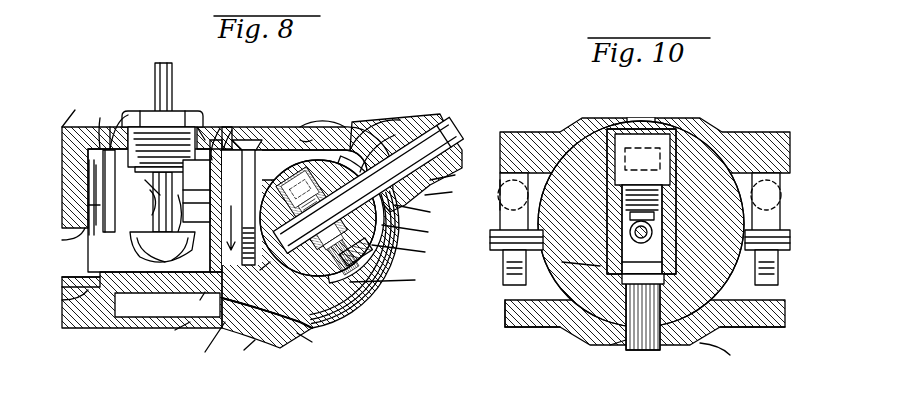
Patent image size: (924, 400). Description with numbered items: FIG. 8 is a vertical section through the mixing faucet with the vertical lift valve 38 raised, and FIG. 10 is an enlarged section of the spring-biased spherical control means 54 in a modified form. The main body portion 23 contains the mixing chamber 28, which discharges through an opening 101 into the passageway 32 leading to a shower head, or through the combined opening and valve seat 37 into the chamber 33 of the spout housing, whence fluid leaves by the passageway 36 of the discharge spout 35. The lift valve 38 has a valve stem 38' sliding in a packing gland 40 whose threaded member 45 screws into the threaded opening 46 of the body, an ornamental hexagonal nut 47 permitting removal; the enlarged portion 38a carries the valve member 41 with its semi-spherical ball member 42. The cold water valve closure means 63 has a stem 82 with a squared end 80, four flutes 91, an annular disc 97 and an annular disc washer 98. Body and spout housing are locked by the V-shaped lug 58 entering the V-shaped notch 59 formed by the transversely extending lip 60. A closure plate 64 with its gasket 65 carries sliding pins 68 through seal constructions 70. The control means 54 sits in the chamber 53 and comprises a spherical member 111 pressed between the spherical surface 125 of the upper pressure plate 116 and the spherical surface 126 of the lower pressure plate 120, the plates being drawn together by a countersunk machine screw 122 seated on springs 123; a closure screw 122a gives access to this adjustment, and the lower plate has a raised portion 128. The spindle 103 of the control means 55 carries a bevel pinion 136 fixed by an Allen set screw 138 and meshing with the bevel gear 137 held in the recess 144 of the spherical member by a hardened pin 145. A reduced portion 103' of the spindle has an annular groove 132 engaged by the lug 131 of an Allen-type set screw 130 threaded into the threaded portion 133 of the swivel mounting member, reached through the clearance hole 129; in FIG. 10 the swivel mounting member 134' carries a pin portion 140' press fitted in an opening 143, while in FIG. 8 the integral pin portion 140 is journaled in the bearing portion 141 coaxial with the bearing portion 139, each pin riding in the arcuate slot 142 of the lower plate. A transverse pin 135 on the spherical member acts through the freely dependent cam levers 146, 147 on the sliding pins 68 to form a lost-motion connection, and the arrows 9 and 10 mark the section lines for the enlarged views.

In FIG. 8, the main body portion 23 is at (62, 140).
In FIG. 8, the stem 82 is at (89, 185).
In FIG. 8, the flutes 91 is at (96, 200).
In FIG. 8, the annular disc washer 98 is at (88, 218).
In FIG. 8, the opening 101 is at (62, 240).
In FIG. 8, the passageway 32 is at (62, 280).
In FIG. 8, the mixing chamber 28 is at (109, 232).
In FIG. 8, the valve stem 38' is at (171, 74).
In FIG. 8, the packing gland 40 is at (140, 111).
In FIG. 8, the threaded opening 46 is at (128, 115).
In FIG. 8, the ornamental hexagonal nut 47 is at (100, 118).
In FIG. 8, the valve closure means 63 is at (110, 130).
In FIG. 8, the vertical lift valve 38 is at (142, 147).
In FIG. 8, the threaded member 45 is at (162, 127).
In FIG. 8, the enlarged valve stem portion 38a is at (153, 200).
In FIG. 8, the squared ends 80 is at (145, 180).
In FIG. 8, the valve member 41 is at (150, 225).
In FIG. 8, the semi-spherical ball member 42 is at (162, 247).
In FIG. 8, the V-shaped notch 59 is at (196, 191).
In FIG. 8, the seal construction 70 is at (196, 193).
In FIG. 8, the transversely extending lip 60 is at (196, 210).
In FIG. 8, the V-shaped transversely extending lug 58 is at (200, 127).
In FIG. 8, the countersunk head machine screw 122 is at (222, 128).
In FIG. 8, the closure countersunk screw 122a is at (232, 130).
In FIG. 8, the section line 10— 10 is at (256, 105).
In FIG. 8, the springs 123 is at (298, 127).
In FIG. 8, the clearance hole 129 is at (305, 140).
In FIG. 10, the clearance hole 129 is at (645, 120).
In FIG. 8, the sliding pins 68 is at (240, 207).
In FIG. 10, the sliding pins 68 is at (500, 210).
In FIG. 8, the section line 9— 9 is at (470, 132).
In FIG. 8, the transverse pin 135 is at (257, 272).
In FIG. 10, the transverse pin 135 is at (503, 268).
In FIG. 8, the control means 55 is at (422, 110).
In FIG. 8, the bevel pinion 136 is at (385, 128).
In FIG. 10, the bevel pinion 136 is at (485, 183).
In FIG. 8, the upper pressure plate 116 is at (392, 128).
In FIG. 10, the upper pressure plate 116 is at (510, 132).
In FIG. 8, the spherical member 111 is at (305, 272).
In FIG. 10, the spherical member 111 is at (590, 152).
In FIG. 8, the Allen-type set screw 130 is at (298, 178).
In FIG. 10, the Allen-type set screw 130 is at (620, 150).
In FIG. 8, the spring-biased spherical control means 54 is at (316, 168).
In FIG. 8, the chamber 53 is at (310, 160).
In FIG. 8, the spindle 103 is at (376, 169).
In FIG. 10, the spindle 103 is at (642, 266).
In FIG. 8, the Allen set screw 138 is at (444, 180).
In FIG. 8, the bevel gear 137 is at (442, 194).
In FIG. 10, the bevel gear 137 is at (485, 198).
In FIG. 8, the hardened pin 145 is at (426, 212).
In FIG. 8, the recess 144 is at (418, 232).
In FIG. 8, the bearing portion 141 is at (412, 252).
In FIG. 8, the pin portion 140 is at (395, 281).
In FIG. 8, the lug or projection 131 is at (348, 262).
In FIG. 10, the lug or projection 131 is at (654, 216).
In FIG. 8, the chamber 33 is at (135, 328).
In FIG. 8, the combined opening and valve seat 37 is at (167, 306).
In FIG. 8, the gasket 65 is at (193, 306).
In FIG. 8, the closure plate 64 is at (179, 335).
In FIG. 8, the cam lever 147 is at (205, 343).
In FIG. 10, the cam lever 147 is at (745, 328).
In FIG. 8, the lower pressure plate 120 is at (267, 323).
In FIG. 10, the lower pressure plate 120 is at (515, 328).
In FIG. 8, the spherical surface 126 is at (290, 330).
In FIG. 8, the discharge spout 35 is at (242, 352).
In FIG. 8, the passageway 36 is at (314, 342).
In FIG. 8, the annular disc 97 is at (66, 124).
In FIG. 10, the spherical surface 125 is at (722, 145).
In FIG. 10, the opening 143 is at (590, 330).
In FIG. 10, the cam lever 146 is at (505, 310).
In FIG. 10, the raised portion 128 is at (732, 360).
In FIG. 10, the bearing portion 139 is at (562, 262).
In FIG. 10, the threaded portion 133 is at (622, 198).
In FIG. 10, the annular groove 132 is at (652, 232).
In FIG. 10, the reduced portion 103' is at (591, 229).
In FIG. 10, the swivel mounting member 134' is at (611, 229).
In FIG. 10, the pin portion 140' is at (668, 319).
In FIG. 10, the slot 142 is at (610, 345).